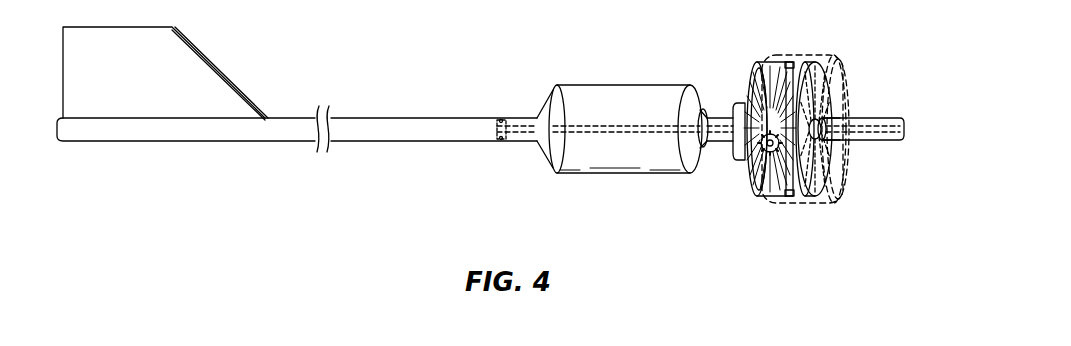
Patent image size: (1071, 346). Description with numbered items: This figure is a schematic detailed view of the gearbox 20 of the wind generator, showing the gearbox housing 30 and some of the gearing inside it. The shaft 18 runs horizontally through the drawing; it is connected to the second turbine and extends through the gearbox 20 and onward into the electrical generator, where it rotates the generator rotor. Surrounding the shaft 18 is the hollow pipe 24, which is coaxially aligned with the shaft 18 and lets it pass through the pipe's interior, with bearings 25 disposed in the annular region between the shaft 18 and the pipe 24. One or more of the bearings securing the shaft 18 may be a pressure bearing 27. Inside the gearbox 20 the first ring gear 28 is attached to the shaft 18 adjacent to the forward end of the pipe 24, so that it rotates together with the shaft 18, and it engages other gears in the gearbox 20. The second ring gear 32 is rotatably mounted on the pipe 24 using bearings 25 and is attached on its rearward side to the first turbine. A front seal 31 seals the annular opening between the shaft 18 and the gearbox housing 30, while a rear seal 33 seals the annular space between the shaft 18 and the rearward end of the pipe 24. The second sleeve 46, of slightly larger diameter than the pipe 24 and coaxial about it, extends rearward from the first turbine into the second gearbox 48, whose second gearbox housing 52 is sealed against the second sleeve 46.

The shaft 18 is at (607, 127).
The gearbox 20 is at (793, 128).
The second gearbox 48 is at (793, 128).
The pipe 24 is at (718, 142).
The bearings 25 is at (792, 64).
The pressure bearing 27 is at (500, 143).
The first ring gear 28 is at (826, 196).
The gearbox housing 30 is at (849, 122).
The second gearbox housing 52 is at (845, 70).
The front seal 31 is at (840, 118).
The second ring gear 32 is at (762, 197).
The rear seal 33 is at (700, 125).
The second sleeve 46 is at (740, 102).